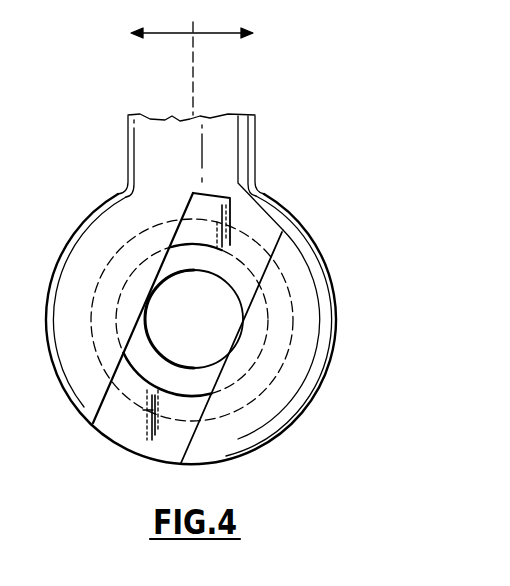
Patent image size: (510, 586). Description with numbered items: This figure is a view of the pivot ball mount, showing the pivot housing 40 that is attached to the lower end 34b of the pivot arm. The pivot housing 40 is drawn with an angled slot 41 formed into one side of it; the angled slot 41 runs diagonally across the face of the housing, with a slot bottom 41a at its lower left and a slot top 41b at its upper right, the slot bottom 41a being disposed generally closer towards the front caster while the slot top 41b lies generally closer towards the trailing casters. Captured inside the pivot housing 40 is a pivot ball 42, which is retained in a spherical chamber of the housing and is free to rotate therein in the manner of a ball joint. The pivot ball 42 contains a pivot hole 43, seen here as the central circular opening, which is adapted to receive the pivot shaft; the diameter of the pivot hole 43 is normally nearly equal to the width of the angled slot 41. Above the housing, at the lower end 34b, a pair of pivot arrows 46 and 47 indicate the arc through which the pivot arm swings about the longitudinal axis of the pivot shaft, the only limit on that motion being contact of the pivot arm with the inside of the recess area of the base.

The lower end 34b is at (128, 157).
The pivot housing 40 is at (335, 297).
The angled slot 41 is at (228, 212).
The slot bottom 41a is at (128, 450).
The slot top 41b is at (282, 236).
The pivot ball 42 is at (238, 278).
The pivot hole 43 is at (218, 345).
The pivot arrow 46 is at (163, 33).
The pivot arrow 47 is at (222, 33).